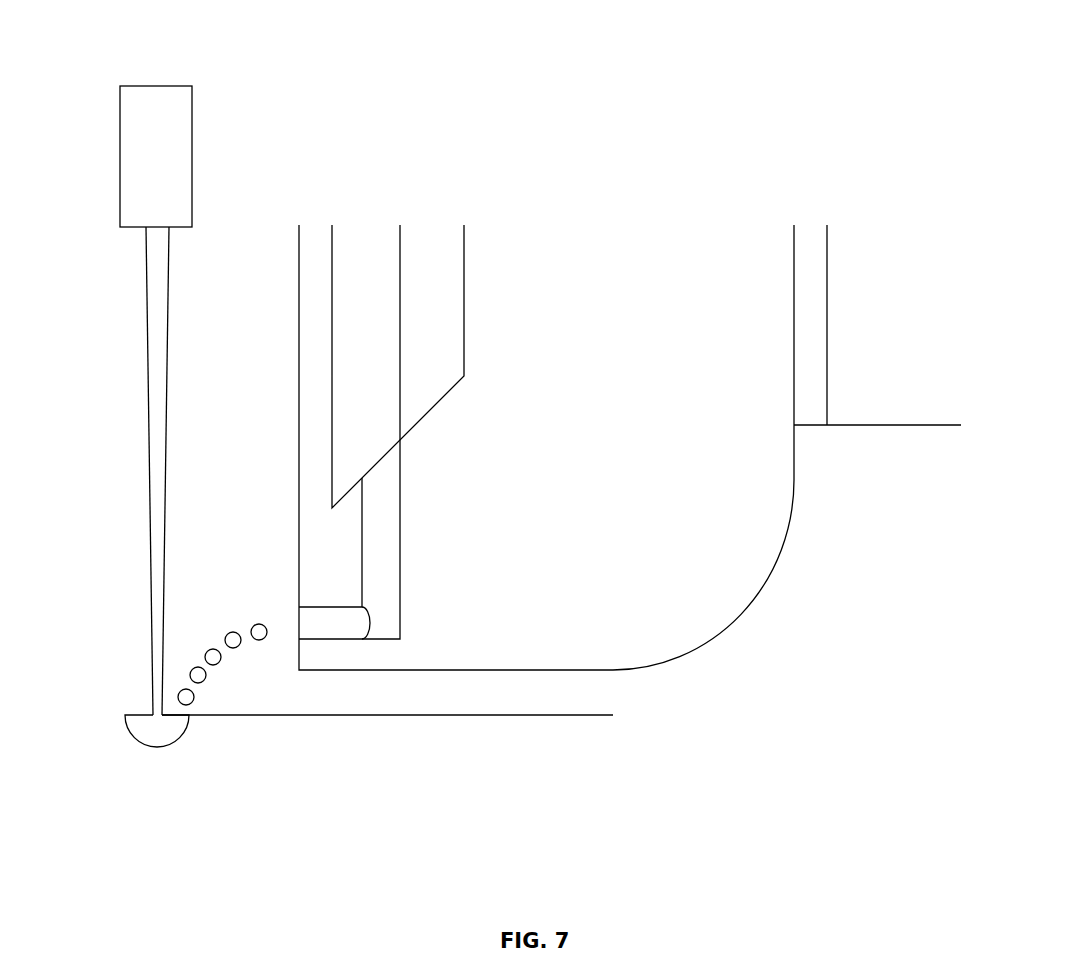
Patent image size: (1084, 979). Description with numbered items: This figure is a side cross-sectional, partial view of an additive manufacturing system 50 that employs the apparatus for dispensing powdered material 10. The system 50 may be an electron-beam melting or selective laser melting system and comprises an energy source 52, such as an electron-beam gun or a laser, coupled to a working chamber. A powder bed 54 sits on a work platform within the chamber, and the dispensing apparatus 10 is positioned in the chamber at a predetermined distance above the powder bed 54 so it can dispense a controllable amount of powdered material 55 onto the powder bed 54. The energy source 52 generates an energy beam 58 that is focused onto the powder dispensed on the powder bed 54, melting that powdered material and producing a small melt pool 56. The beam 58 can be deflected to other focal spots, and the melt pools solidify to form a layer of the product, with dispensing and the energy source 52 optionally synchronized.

The apparatus for dispensing powdered material 10 is at (723, 573).
The additive manufacturing system 50 is at (612, 60).
The energy source 52 is at (120, 170).
The powder bed 54 is at (311, 717).
The powdered material 55 is at (226, 635).
The melt pool 56 is at (163, 727).
The energy beam 58 is at (148, 457).